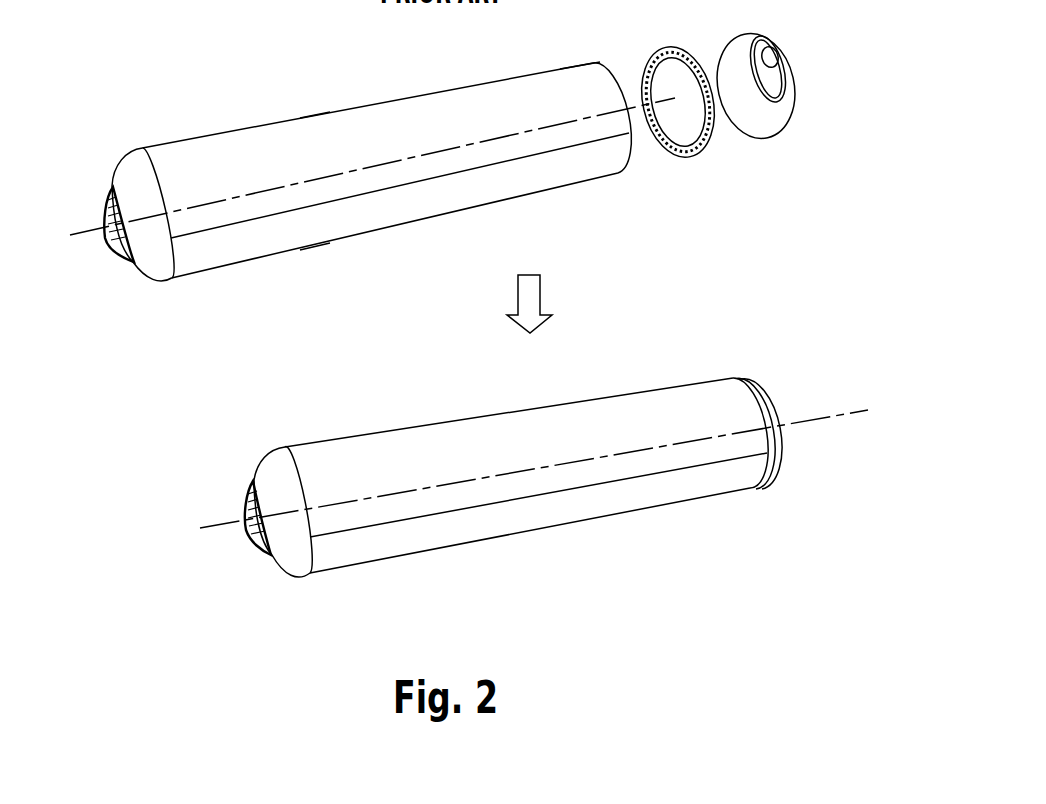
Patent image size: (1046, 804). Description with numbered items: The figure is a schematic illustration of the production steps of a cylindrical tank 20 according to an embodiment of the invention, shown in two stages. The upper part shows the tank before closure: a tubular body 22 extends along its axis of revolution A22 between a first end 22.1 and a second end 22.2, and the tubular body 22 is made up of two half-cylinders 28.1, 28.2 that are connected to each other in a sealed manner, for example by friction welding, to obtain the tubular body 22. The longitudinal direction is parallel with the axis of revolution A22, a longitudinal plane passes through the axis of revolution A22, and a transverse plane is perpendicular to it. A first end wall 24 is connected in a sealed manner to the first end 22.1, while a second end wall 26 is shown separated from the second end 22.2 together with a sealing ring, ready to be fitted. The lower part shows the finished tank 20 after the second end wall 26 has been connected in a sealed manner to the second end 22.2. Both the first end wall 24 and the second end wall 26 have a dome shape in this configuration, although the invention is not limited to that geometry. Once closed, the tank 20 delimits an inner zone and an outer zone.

The cylindrical tank 20 is at (509, 405).
The tubular body 22 is at (371, 236).
The first end 22.1 is at (156, 153).
The second end 22.2 is at (597, 78).
The first end wall 24 is at (187, 417).
The second end wall 26 is at (735, 244).
The half-cylinder 28.1 is at (237, 257).
The half-cylinder 28.2 is at (236, 143).
The axis of revolution A22 is at (361, 167).